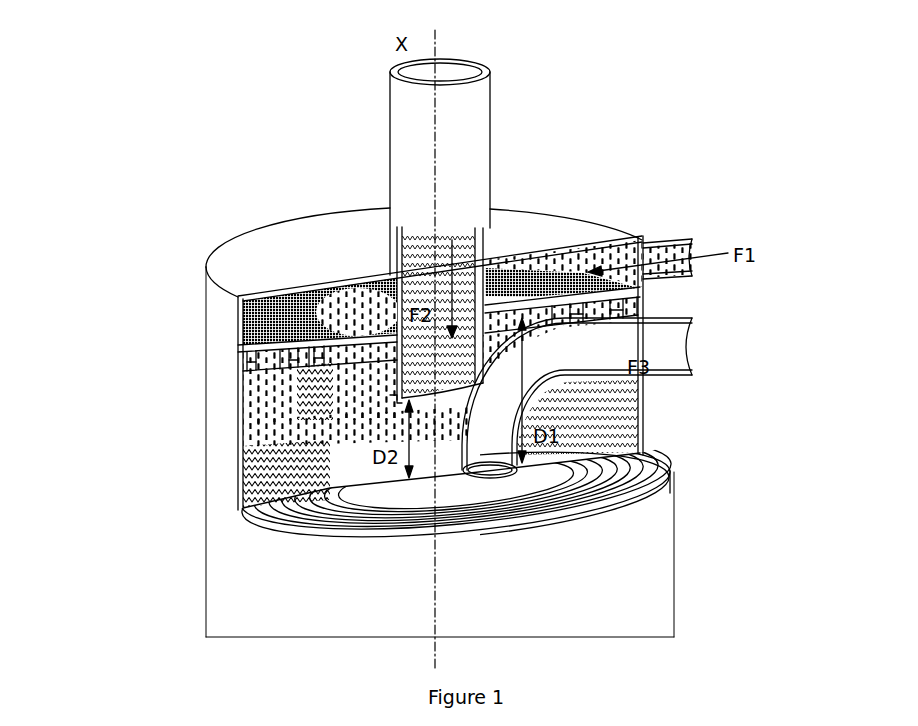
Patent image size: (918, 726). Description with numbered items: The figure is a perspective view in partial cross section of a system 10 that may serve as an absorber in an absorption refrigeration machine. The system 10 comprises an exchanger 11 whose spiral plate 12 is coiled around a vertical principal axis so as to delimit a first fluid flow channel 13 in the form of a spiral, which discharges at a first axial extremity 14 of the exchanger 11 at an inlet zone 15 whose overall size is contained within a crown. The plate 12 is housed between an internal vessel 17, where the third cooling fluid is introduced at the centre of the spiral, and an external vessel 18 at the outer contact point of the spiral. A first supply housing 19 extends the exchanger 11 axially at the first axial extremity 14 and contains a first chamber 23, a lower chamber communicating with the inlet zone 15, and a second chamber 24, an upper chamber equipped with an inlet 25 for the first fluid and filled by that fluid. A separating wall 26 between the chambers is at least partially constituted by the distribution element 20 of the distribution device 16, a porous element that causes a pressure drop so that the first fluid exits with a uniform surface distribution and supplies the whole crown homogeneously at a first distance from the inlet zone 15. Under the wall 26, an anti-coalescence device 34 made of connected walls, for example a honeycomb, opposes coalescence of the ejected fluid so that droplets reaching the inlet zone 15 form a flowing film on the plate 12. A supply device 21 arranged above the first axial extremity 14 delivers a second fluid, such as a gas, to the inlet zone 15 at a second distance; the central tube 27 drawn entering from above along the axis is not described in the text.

The system 10 is at (192, 185).
The exchanger 11 is at (216, 599).
The spiral plate 12 is at (300, 522).
The first fluid flow channel 13 is at (642, 464).
The first axial extremity 14 is at (656, 529).
The inlet zone 15 is at (688, 447).
The distribution device 16 is at (328, 383).
The internal vessel 17 is at (503, 490).
The external vessel 18 is at (635, 617).
The upper fluid supply housing 19 is at (217, 398).
The distribution element 20 is at (288, 300).
The supply device 21 is at (380, 357).
The first chamber 23 is at (255, 463).
The second chamber 24 is at (543, 270).
The inlet 25 is at (660, 252).
The separating wall 26 is at (278, 345).
The inlet tube 27 is at (475, 167).
The anti-coalescence device 34 is at (268, 361).